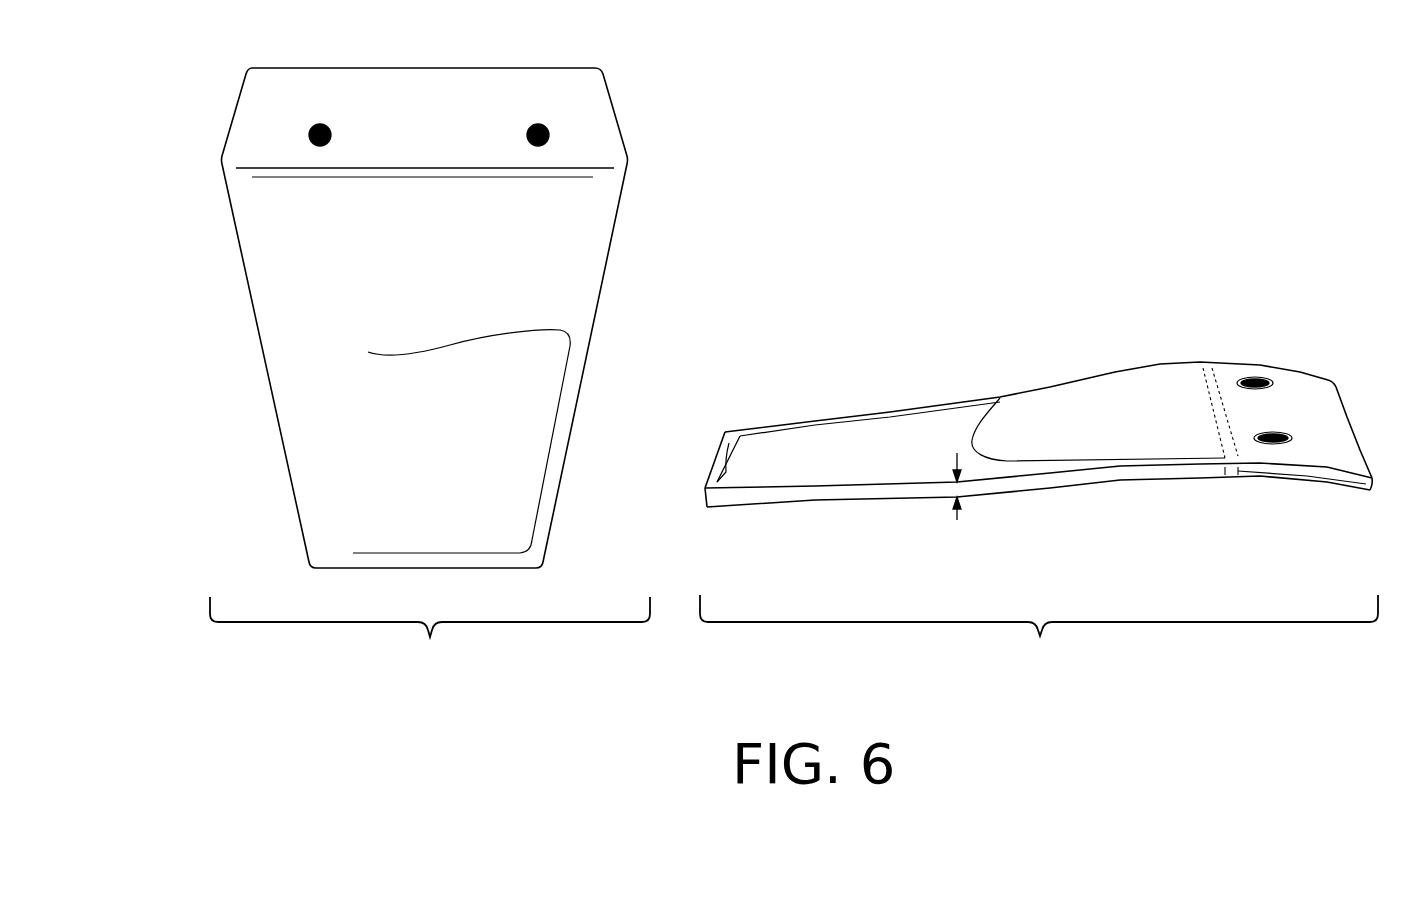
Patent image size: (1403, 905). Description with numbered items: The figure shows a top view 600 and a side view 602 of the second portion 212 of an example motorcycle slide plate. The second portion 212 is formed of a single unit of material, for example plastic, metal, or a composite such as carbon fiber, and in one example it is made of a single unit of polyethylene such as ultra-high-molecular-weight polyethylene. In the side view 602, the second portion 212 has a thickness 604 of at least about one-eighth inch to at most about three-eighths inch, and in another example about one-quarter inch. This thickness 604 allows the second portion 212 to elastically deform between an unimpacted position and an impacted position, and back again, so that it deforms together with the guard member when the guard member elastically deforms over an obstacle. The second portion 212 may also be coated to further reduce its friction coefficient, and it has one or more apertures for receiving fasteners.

The second portion 212 is at (627, 160).
The top view 600 is at (430, 631).
The side view 602 is at (1039, 627).
The thickness 604 is at (957, 520).